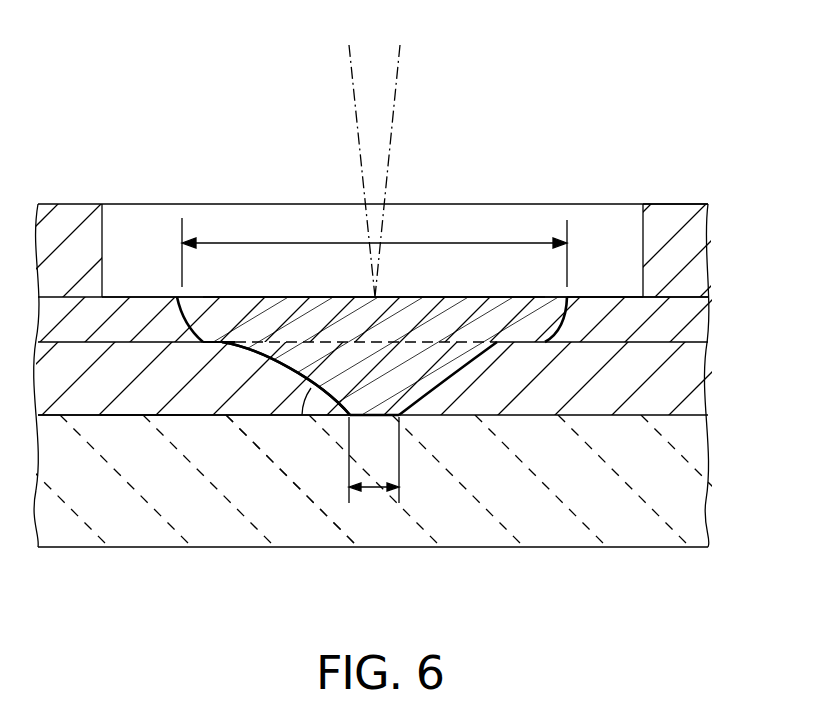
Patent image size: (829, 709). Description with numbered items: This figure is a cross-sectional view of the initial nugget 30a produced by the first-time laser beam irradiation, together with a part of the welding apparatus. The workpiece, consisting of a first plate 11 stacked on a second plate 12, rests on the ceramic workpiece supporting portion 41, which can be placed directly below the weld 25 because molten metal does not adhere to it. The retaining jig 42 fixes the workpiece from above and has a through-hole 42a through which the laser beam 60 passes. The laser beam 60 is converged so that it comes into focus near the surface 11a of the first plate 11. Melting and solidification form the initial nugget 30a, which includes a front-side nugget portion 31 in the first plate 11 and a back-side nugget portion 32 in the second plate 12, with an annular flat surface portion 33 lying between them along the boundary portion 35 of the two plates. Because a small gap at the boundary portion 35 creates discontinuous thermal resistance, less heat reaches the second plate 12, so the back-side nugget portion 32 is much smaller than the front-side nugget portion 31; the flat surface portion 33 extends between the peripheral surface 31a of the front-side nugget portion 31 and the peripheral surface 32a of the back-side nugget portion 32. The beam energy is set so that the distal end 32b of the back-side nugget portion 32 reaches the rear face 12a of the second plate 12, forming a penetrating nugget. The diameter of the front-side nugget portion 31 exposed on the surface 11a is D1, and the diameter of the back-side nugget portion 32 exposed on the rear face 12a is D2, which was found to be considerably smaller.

The first plate 11 is at (697, 312).
The surface of the first plate 11a is at (148, 292).
The second plate 12 is at (594, 400).
The rear face of the second plate 12a is at (87, 415).
The weld 25 is at (590, 240).
The initial nugget 30a is at (433, 296).
The front-side nugget portion 31 is at (288, 324).
The peripheral surface of the front-side nugget portion 31a is at (193, 332).
The back-side nugget portion 32 is at (433, 358).
The peripheral surface of the back-side nugget portion 32a is at (270, 366).
The distal end of the back-side nugget portion 32b is at (374, 417).
The flat surface portion 33 is at (190, 415).
The boundary portion 35 is at (697, 362).
The workpiece supporting portion 41 is at (298, 533).
The retaining jig 42 is at (680, 213).
The through-hole 42a is at (482, 223).
The laser beam 60 is at (358, 158).
The diameter of the front-side nugget portion D1 is at (325, 243).
The diameter of the back-side nugget portion D2 is at (373, 491).